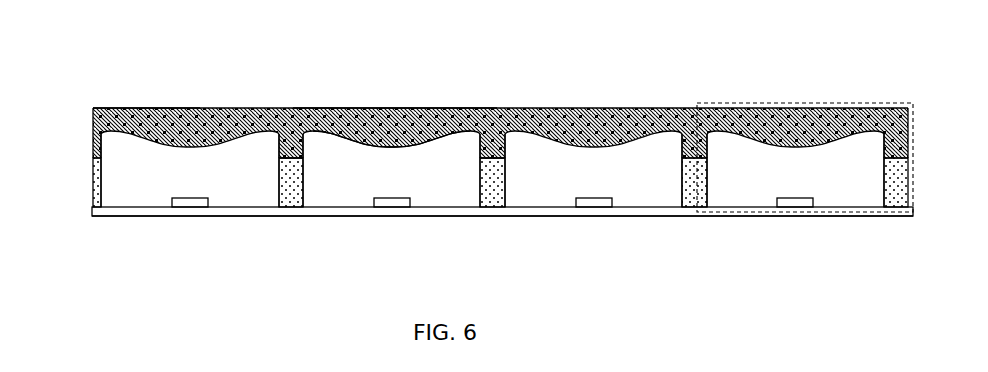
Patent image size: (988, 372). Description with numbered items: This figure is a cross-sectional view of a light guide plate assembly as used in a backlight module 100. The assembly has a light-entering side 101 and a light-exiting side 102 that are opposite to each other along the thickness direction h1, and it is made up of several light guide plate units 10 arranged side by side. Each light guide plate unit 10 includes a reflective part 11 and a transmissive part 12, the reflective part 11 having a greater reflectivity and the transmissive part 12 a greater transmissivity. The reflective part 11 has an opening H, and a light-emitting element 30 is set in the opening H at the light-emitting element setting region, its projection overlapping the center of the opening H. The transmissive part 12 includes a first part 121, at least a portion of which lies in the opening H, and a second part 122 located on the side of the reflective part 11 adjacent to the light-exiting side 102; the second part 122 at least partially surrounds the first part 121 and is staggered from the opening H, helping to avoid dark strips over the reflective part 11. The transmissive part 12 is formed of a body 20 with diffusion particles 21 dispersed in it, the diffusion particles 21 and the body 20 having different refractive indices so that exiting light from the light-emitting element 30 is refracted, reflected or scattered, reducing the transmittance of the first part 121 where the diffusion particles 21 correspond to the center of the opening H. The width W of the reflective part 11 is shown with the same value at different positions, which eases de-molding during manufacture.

The backlight module 100 is at (857, 60).
The light guide plate unit 10 is at (913, 216).
The light-entering side 101 is at (118, 236).
The light-exiting side 102 is at (121, 100).
The reflective part 11 is at (495, 210).
The transmissive part 12 is at (293, 68).
The first part 121 is at (396, 108).
The second part 122 is at (290, 108).
The body 20 is at (568, 108).
The diffusion particles 21 is at (637, 108).
The light-emitting element 30 is at (190, 209).
The opening H is at (251, 203).
The width of the reflective part W is at (279, 212).
The thickness direction h1 is at (53, 228).